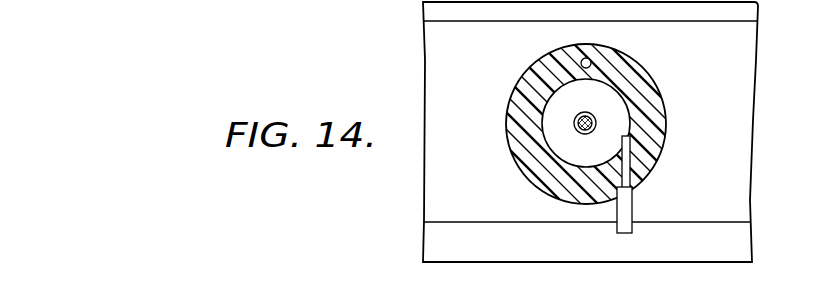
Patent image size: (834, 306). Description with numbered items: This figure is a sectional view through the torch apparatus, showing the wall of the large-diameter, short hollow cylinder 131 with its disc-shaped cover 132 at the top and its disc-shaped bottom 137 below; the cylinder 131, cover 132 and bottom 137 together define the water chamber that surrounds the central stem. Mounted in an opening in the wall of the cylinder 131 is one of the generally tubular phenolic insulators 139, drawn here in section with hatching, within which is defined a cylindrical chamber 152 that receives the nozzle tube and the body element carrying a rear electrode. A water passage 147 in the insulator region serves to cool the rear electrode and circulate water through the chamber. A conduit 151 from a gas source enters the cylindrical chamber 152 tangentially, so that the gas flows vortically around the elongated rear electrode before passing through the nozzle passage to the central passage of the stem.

The hollow cylinder 131 is at (743, 118).
The cover 132 is at (743, 14).
The bottom 137 is at (725, 243).
The phenolic insulator 139 is at (655, 82).
The water passage 147 is at (592, 62).
The conduit 151 is at (627, 208).
The cylindrical chamber 152 is at (586, 123).